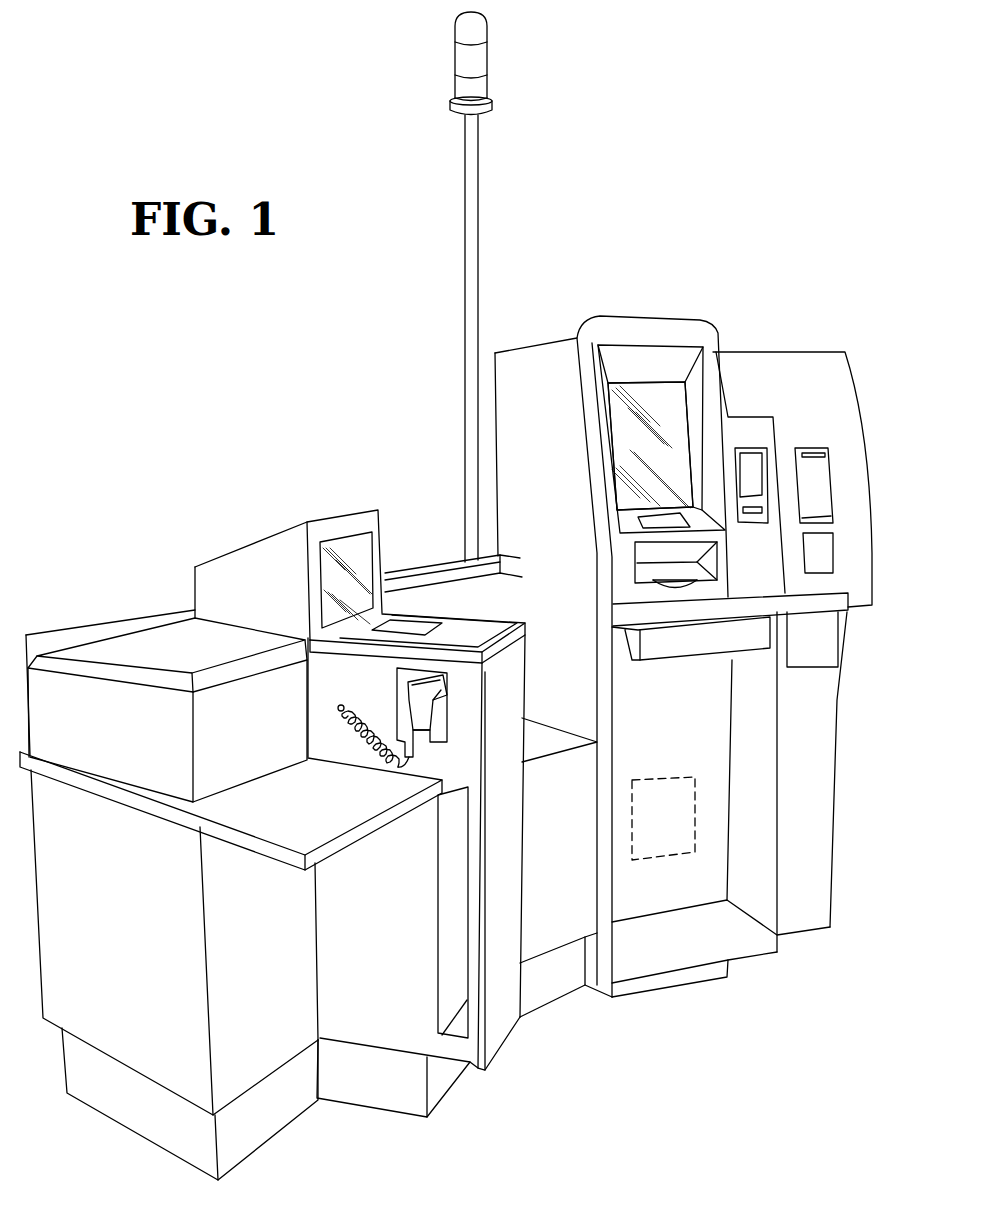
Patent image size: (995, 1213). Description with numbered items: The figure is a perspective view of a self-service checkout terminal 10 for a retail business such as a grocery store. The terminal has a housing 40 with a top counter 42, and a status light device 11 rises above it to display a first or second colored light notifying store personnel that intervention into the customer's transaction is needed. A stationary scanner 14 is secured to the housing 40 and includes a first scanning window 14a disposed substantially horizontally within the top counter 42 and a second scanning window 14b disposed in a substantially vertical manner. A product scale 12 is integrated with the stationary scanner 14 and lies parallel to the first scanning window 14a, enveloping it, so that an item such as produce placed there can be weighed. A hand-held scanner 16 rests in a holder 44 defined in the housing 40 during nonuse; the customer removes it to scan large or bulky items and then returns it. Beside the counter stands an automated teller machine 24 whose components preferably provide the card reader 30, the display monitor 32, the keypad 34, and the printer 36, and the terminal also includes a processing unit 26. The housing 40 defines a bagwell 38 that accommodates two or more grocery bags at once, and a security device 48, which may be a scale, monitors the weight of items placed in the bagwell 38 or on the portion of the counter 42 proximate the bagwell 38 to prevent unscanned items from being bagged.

The self-service checkout terminal 10 is at (742, 146).
The status light device 11 is at (488, 60).
The product scale 12 is at (433, 825).
The stationary scanner 14 is at (288, 549).
The first scanning window 14a is at (390, 628).
The second scanning window 14b is at (330, 601).
The hand-held scanner 16 is at (417, 698).
The automated teller machine 24 is at (709, 656).
The processing unit 26 is at (660, 840).
The card reader 30 is at (753, 467).
The display monitor 32 is at (630, 442).
The keypad 34 is at (647, 520).
The printer 36 is at (820, 553).
The bagwell 38 is at (555, 662).
The housing 40 is at (152, 963).
The top counter 42 is at (151, 650).
The holder 44 is at (390, 708).
The security device 48 is at (522, 777).